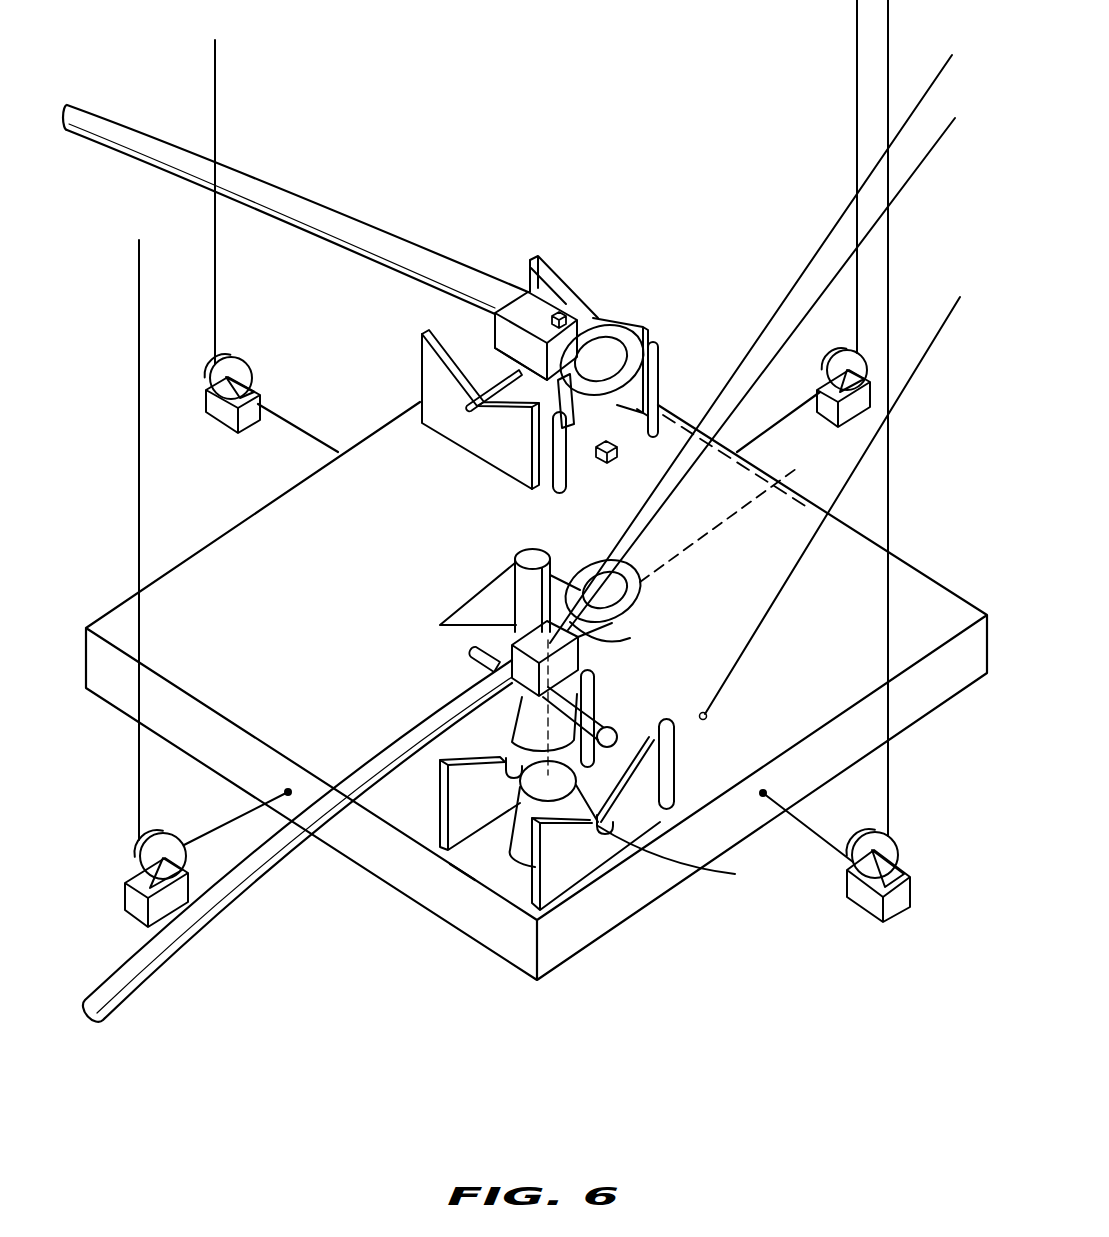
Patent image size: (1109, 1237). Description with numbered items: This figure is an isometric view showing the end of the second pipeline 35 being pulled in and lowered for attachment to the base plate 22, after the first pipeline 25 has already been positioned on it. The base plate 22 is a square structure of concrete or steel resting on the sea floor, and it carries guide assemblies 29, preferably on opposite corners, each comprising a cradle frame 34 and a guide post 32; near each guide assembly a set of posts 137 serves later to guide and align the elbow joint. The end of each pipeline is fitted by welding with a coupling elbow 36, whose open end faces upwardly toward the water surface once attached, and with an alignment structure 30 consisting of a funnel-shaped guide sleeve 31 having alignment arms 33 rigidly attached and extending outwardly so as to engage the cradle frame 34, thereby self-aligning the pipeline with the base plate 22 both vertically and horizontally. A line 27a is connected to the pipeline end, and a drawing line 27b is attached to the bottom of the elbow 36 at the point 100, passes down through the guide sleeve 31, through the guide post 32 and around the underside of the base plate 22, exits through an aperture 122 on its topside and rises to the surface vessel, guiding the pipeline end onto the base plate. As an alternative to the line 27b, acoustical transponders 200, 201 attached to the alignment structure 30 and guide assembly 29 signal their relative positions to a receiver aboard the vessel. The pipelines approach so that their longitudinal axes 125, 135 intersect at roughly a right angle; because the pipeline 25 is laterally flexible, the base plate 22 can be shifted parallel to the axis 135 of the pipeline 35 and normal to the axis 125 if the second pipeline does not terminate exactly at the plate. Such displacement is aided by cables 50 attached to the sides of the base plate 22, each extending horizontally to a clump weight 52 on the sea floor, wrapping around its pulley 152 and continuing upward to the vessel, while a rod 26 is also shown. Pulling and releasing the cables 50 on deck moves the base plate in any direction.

The base plate 22 is at (323, 555).
The pipeline 25 is at (267, 193).
The rod 26 is at (820, 245).
The line 27a is at (930, 152).
The drawing line 27b is at (930, 344).
The guide assembly 29 is at (461, 870).
The alignment structure 30 is at (539, 318).
The guide sleeve 31 is at (487, 367).
The guide post 32 is at (523, 803).
The alignment arms 33 is at (470, 408).
The cradle frame 34 is at (430, 368).
The second pipeline 35 is at (153, 953).
The coupling elbow 36 is at (625, 328).
The cables 50 is at (216, 300).
The clump weights 52 is at (198, 386).
The point 100 is at (592, 682).
The aperture 122 is at (708, 717).
The longitudinal axis 125 is at (806, 502).
The longitudinal axis 135 is at (685, 551).
The posts 137 is at (660, 358).
The pulley 152 is at (236, 366).
The acoustical transponder 200 is at (558, 318).
The acoustical transponder 201 is at (604, 460).